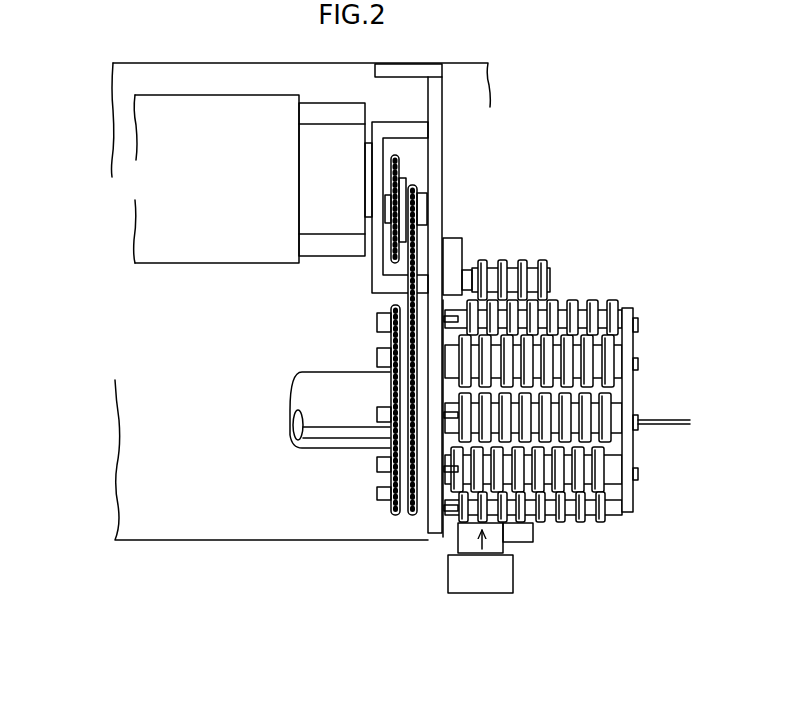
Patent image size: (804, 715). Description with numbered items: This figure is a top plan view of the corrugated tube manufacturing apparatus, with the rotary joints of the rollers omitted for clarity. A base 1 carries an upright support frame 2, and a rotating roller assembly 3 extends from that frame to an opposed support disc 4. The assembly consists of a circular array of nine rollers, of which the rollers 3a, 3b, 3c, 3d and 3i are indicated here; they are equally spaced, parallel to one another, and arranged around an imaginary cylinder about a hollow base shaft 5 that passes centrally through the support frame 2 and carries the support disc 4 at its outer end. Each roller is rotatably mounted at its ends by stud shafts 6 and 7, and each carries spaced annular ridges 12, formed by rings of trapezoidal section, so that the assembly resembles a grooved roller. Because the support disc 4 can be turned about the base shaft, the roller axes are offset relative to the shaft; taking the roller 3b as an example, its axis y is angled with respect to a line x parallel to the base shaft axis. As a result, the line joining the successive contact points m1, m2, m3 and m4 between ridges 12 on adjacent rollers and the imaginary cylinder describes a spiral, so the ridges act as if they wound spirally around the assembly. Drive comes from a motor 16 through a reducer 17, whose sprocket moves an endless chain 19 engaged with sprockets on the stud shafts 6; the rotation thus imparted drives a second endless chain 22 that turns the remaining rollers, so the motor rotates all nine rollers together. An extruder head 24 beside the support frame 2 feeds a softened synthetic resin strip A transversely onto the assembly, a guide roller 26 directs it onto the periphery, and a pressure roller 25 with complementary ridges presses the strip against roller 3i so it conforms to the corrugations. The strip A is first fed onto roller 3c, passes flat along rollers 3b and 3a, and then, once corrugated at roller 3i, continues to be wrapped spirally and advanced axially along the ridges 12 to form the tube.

The base 1 is at (272, 542).
The support frame 2 is at (444, 137).
The roller assembly 3 is at (588, 529).
The roller 3a is at (600, 350).
The roller 3b is at (590, 410).
The roller 3c is at (590, 468).
The roller 3d is at (605, 515).
The roller 3i is at (596, 302).
The support disc 4 is at (628, 310).
The base shaft 5 is at (318, 447).
The stud shaft 6 is at (377, 492).
The stud shaft 7 is at (640, 484).
The annular ridges 12 is at (588, 301).
The motor 16 is at (205, 263).
The reducer 17 is at (364, 270).
The endless chain 19 is at (418, 243).
The second endless chain 22 is at (392, 338).
The extruder head 24 is at (482, 597).
The pressure roller 25 is at (512, 260).
The guide roller 26 is at (528, 543).
The strip A is at (460, 548).
The contact point m1 is at (462, 346).
The contact point m2 is at (443, 417).
The contact point m3 is at (453, 487).
The contact point m4 is at (455, 518).
The line parallel to base shaft axis x is at (690, 398).
The roller axis y is at (690, 426).